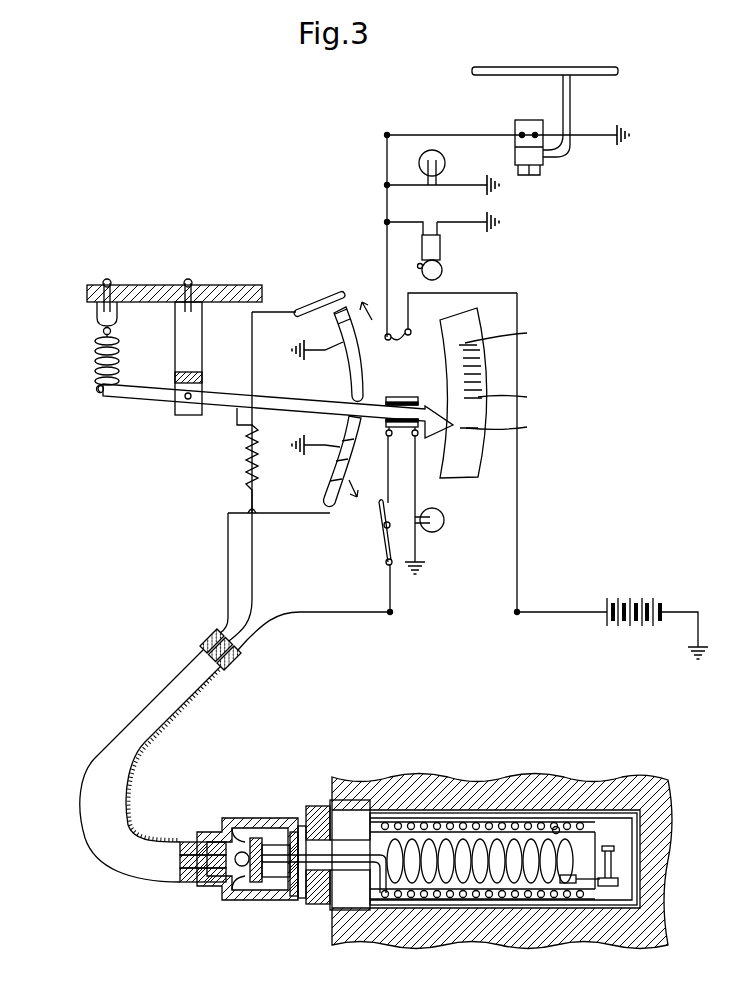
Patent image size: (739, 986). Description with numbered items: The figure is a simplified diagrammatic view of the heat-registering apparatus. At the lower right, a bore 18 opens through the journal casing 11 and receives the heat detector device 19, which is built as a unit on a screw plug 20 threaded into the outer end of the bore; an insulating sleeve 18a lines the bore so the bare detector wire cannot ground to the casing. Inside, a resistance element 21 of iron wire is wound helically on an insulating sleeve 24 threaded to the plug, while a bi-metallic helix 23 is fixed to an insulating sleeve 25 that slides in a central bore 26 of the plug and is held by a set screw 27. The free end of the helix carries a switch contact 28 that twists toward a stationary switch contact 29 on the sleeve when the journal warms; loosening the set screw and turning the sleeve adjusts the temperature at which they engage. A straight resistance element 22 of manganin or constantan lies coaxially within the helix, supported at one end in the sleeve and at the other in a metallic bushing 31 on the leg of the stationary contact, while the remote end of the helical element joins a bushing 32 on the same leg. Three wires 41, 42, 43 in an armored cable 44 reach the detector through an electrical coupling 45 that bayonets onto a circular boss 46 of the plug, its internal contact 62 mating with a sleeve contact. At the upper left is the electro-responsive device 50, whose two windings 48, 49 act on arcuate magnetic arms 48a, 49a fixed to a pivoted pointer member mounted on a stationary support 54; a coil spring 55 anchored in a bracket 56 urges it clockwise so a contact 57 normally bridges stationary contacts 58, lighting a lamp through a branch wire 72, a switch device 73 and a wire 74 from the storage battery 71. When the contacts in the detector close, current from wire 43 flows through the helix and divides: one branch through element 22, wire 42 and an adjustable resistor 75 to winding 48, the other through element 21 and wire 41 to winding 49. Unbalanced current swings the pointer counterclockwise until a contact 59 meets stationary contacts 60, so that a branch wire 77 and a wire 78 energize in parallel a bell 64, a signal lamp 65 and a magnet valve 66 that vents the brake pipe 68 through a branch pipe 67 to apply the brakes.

The journal casing 11 is at (484, 780).
The bore 18 is at (640, 853).
The insulating sleeve 18a is at (436, 815).
The heat detector device 19 is at (308, 800).
The screw plug 20 is at (320, 905).
The resistance element 21 is at (392, 820).
The resistance element 22 is at (448, 884).
The bi-metallic helix 23 is at (512, 884).
The insulating sleeve 24 is at (565, 830).
The insulating sleeve 25 is at (302, 900).
The central bore 26 is at (350, 900).
The set screw 27 is at (314, 805).
The switch contact 28 is at (573, 841).
The stationary switch contact 29 is at (580, 877).
The metallic bushing 31 is at (617, 851).
The bushing 32 is at (617, 873).
The wire 41 is at (205, 640).
The wire 42 is at (205, 655).
The wire 43 is at (464, 613).
The armored cable 44 is at (110, 748).
The electrical coupling 45 is at (236, 816).
The circular boss 46 is at (294, 898).
The electromagnetic winding 48 is at (335, 318).
The arcuate arm 48a is at (356, 380).
The electromagnetic winding 49 is at (329, 472).
The arcuate arm 49a is at (350, 441).
The electro-responsive device 50 is at (45, 399).
The stationary support 54 is at (240, 298).
The coil spring 55 is at (120, 358).
The bracket 56 is at (120, 318).
The contact 57 is at (418, 437).
The stationary spaced contacts 58 is at (402, 461).
The contact 59 is at (410, 392).
The stationary spaced contacts 60 is at (451, 327).
The contact 62 is at (232, 880).
The bell 64 is at (440, 250).
The signal lamp 65 is at (444, 158).
The magnet valve 66 is at (532, 112).
The branch pipe 67 is at (570, 100).
The brake pipe 68 is at (512, 74).
The storage battery 71 is at (620, 596).
The branch wire 72 is at (389, 588).
The switch device 73 is at (383, 533).
The wire 74 is at (415, 495).
The adjustable resistor 75 is at (243, 462).
The branch wire 77 is at (517, 553).
The wire 78 is at (387, 210).